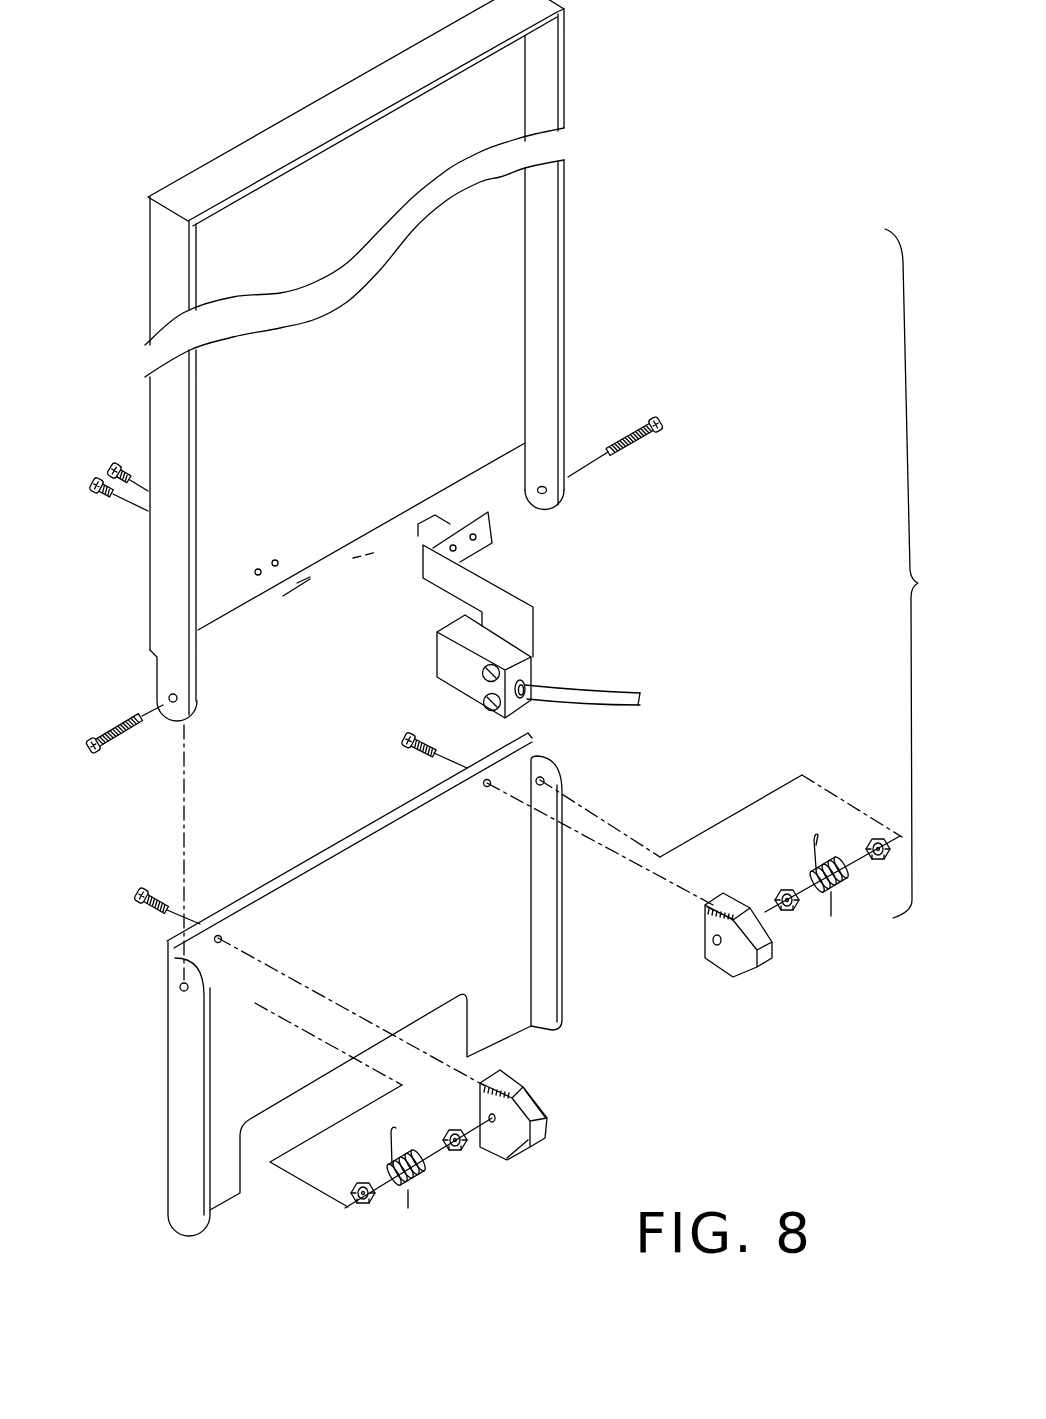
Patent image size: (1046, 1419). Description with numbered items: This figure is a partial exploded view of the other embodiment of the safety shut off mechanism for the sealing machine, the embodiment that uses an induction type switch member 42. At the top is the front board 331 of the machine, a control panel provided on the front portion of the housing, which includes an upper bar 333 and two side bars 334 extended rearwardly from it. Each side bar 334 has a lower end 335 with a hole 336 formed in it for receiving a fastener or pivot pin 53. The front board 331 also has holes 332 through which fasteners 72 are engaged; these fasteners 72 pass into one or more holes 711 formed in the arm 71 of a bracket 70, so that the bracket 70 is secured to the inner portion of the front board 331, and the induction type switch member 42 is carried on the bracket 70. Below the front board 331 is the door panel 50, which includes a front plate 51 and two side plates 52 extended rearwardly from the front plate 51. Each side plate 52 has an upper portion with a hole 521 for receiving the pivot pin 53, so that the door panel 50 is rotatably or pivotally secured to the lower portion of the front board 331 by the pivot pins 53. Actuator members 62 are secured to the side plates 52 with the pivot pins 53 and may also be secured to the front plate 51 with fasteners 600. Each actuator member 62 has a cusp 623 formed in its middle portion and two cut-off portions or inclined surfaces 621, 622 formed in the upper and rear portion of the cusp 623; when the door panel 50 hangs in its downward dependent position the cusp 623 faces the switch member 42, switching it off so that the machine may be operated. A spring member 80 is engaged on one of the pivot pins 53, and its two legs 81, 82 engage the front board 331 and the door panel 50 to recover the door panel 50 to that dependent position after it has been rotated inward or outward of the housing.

The front board 331 is at (398, 367).
The upper bar 333 is at (243, 163).
The side bars 334 is at (548, 213).
The lower end 335 is at (552, 443).
The hole 336 is at (548, 492).
The holes 332 is at (258, 576).
The fasteners 72 is at (124, 462).
The arm 71 is at (486, 524).
The holes 711 is at (455, 549).
The bracket 70 is at (556, 581).
The induction type switch member 42 is at (457, 678).
The pivot pin 53 is at (114, 750).
The front plate 51 is at (330, 877).
The hole 521 is at (541, 781).
The side plates 52 is at (540, 908).
The fasteners 600 is at (150, 912).
The door panel 50 is at (386, 984).
The actuator member 62 is at (624, 1065).
The inclined surface 621 is at (533, 1101).
The cusp 623 is at (548, 1130).
The inclined surface 622 is at (520, 1156).
The leg 81 is at (392, 1142).
The leg 82 is at (408, 1200).
The spring member 80 is at (622, 1054).